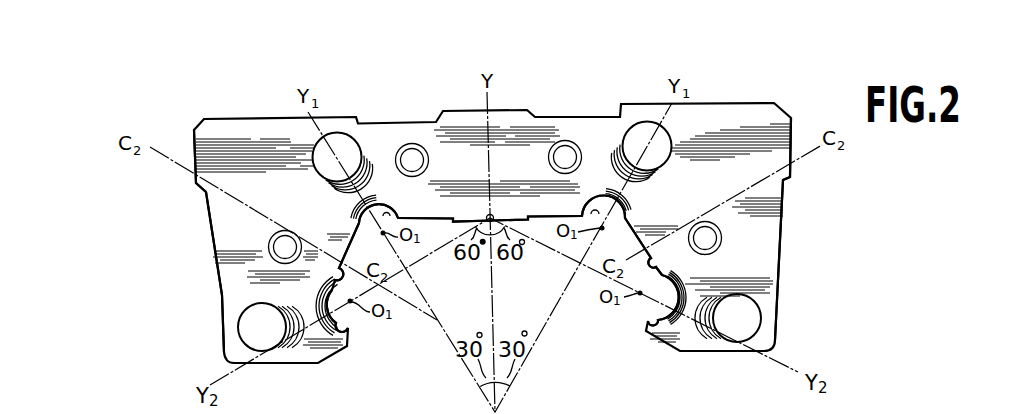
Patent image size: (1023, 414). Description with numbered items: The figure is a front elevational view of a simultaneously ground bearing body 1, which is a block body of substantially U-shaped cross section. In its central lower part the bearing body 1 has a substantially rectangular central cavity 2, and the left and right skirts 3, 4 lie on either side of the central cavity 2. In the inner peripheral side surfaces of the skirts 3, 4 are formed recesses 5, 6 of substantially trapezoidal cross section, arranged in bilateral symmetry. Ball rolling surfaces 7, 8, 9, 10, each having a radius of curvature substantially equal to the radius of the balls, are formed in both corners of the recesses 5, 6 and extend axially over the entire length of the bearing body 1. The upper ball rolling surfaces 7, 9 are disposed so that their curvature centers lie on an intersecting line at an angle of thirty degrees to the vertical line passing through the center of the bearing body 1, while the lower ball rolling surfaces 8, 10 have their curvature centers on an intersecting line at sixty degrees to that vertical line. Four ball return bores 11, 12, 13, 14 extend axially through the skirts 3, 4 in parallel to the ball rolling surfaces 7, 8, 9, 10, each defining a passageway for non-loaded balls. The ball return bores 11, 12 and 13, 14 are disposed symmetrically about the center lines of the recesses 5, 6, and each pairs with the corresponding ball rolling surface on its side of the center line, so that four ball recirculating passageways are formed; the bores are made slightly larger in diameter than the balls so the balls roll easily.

The bearing body 1 is at (778, 96).
The central cavity 2 is at (522, 303).
The left skirt 3 is at (229, 277).
The right skirt 4 is at (770, 232).
The recess 5 is at (335, 276).
The recess 6 is at (660, 266).
The upper ball rolling surface 7 is at (397, 213).
The lower ball rolling surface 8 is at (347, 318).
The upper ball rolling surface 9 is at (590, 207).
The lower ball rolling surface 10 is at (646, 312).
The ball return bore 11 is at (345, 150).
The ball return bore 12 is at (247, 335).
The ball return bore 13 is at (657, 145).
The ball return bore 14 is at (748, 318).